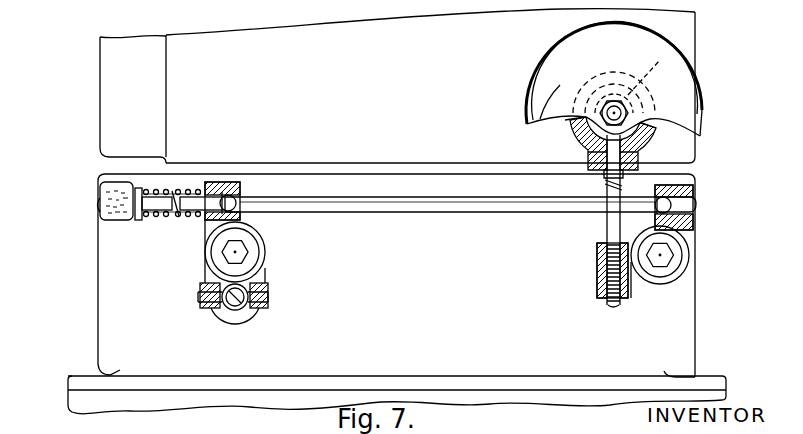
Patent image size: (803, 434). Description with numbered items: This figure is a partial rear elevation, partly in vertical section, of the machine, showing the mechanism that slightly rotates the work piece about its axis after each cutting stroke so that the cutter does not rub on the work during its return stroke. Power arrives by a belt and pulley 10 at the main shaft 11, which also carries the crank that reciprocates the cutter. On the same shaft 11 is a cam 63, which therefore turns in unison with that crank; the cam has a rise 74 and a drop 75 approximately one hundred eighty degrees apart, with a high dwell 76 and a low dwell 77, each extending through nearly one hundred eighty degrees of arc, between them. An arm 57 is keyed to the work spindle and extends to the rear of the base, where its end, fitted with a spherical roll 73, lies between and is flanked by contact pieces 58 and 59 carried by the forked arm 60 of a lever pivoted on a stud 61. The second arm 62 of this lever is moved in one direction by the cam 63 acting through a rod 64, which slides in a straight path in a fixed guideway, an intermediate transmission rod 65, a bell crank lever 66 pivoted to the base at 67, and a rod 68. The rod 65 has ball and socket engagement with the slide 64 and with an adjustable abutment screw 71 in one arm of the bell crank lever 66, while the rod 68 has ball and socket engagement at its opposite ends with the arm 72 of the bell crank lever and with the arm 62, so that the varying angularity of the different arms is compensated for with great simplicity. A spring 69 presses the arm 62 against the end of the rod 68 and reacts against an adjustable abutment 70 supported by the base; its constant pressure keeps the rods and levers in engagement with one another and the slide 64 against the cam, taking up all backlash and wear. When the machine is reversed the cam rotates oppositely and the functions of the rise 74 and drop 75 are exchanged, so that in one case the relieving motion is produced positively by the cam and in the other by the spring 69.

The belt and pulley 10 is at (703, 110).
The main shaft 11 is at (626, 112).
The arm 57 is at (247, 317).
The contact piece 58 is at (205, 308).
The contact piece 59 is at (268, 300).
The forked arm 60 is at (257, 277).
The stud 61 is at (240, 250).
The second arm 62 is at (213, 197).
The cam 63 is at (561, 148).
The rod 64 is at (590, 165).
The rod 65 is at (618, 220).
The bell crank lever 66 is at (643, 284).
The pivot 67 is at (662, 258).
The rod 68 is at (452, 207).
The spring 69 is at (176, 215).
The adjustable abutment 70 is at (139, 220).
The adjustable abutment screw 71 is at (600, 278).
The arm 72 is at (693, 193).
The spherical roll 73 is at (237, 304).
The rise 74 is at (614, 98).
The drop 75 is at (648, 137).
The high dwell 76 is at (568, 135).
The low dwell 77 is at (641, 86).